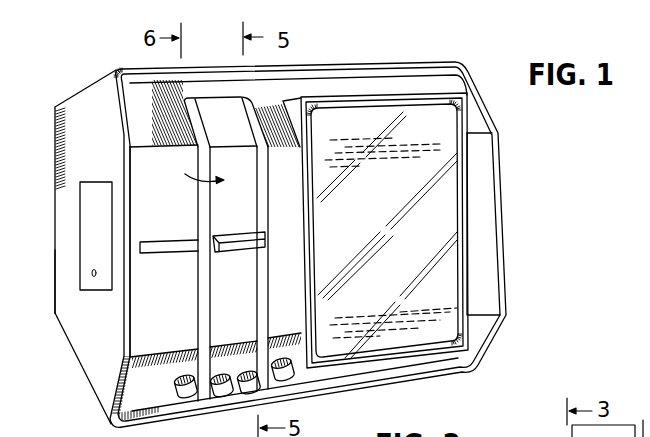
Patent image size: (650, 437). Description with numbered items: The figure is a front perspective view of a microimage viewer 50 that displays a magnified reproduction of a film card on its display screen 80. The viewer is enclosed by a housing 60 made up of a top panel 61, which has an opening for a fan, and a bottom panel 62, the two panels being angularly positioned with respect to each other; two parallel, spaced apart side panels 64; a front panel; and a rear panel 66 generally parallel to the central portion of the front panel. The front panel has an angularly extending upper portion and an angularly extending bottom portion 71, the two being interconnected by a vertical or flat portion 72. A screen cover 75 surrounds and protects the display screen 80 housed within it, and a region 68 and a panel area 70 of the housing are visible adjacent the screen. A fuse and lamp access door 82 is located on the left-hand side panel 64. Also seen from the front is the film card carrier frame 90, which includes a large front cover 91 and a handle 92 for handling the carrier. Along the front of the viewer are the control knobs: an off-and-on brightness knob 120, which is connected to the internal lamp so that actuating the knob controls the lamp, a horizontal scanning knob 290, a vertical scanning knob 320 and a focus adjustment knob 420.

The microimage viewer 50 is at (393, 58).
The housing 60 is at (333, 60).
The top panel 61 is at (115, 68).
The bottom panel 62 is at (88, 385).
The side panels 64 is at (68, 307).
The rear panel 66 is at (55, 202).
The right side wall 68 is at (481, 198).
The front panel 70 is at (283, 104).
The bottom portion 71 is at (162, 399).
The flat portion 72 is at (178, 222).
The screen cover 75 is at (457, 343).
The display screen 80 is at (397, 205).
The fuse and lamp access door 82 is at (91, 231).
The film card carrier frame 90 is at (191, 170).
The front cover 91 is at (243, 214).
The handle 92 is at (246, 252).
The off-and-on brightness knob 120 is at (189, 377).
The horizontal scanning knob 290 is at (256, 386).
The vertical scanning knob 320 is at (220, 399).
The focus adjustment knob 420 is at (288, 368).